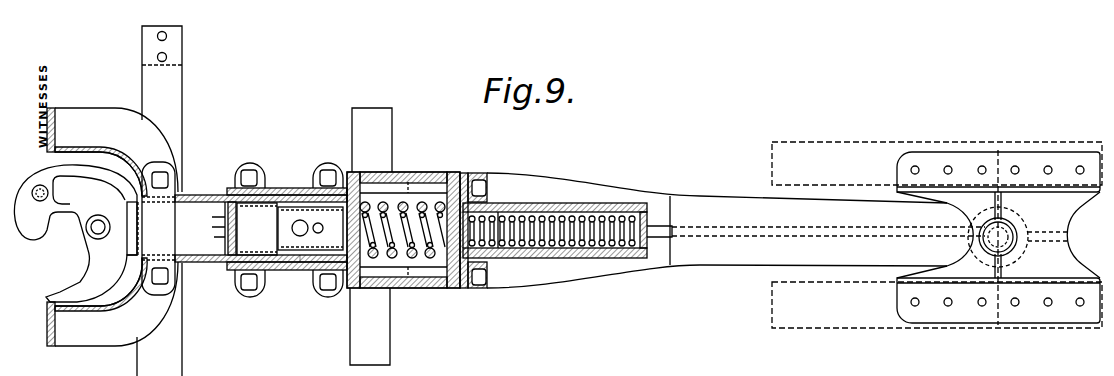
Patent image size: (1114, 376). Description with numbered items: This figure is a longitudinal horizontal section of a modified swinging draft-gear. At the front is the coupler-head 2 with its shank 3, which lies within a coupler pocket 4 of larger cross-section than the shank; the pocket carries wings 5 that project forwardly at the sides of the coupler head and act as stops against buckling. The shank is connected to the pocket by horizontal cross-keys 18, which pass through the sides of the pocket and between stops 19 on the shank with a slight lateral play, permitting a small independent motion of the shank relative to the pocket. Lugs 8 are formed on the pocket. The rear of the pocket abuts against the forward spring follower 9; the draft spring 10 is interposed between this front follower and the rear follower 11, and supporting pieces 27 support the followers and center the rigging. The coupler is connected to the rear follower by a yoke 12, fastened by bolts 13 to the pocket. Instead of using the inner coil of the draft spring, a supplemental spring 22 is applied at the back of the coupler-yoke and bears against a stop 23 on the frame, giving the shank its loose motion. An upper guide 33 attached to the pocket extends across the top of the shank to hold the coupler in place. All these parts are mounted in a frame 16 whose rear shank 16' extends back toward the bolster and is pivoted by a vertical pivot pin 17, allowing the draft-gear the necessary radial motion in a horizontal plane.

The coupler-head 2 is at (76, 233).
The coupler shank 3 is at (261, 228).
The coupler pocket 4 is at (300, 264).
The wings 5 is at (112, 227).
The lugs 8 is at (230, 271).
The forward spring follower 9 is at (352, 280).
The spring 10 is at (418, 257).
The rear follower 11 is at (448, 263).
The yoke 12 is at (490, 205).
The bolts 13 is at (318, 223).
The frame 16 is at (473, 219).
The rear shank of the frame 16' is at (717, 230).
The vertical pivot pin 17 is at (1003, 238).
The cross-keys 18 is at (257, 229).
The stops 19 is at (213, 217).
The supplemental spring 22 is at (572, 247).
The stop 23 is at (648, 258).
The supporting pieces 27 is at (430, 186).
The upper guide 33 is at (158, 228).